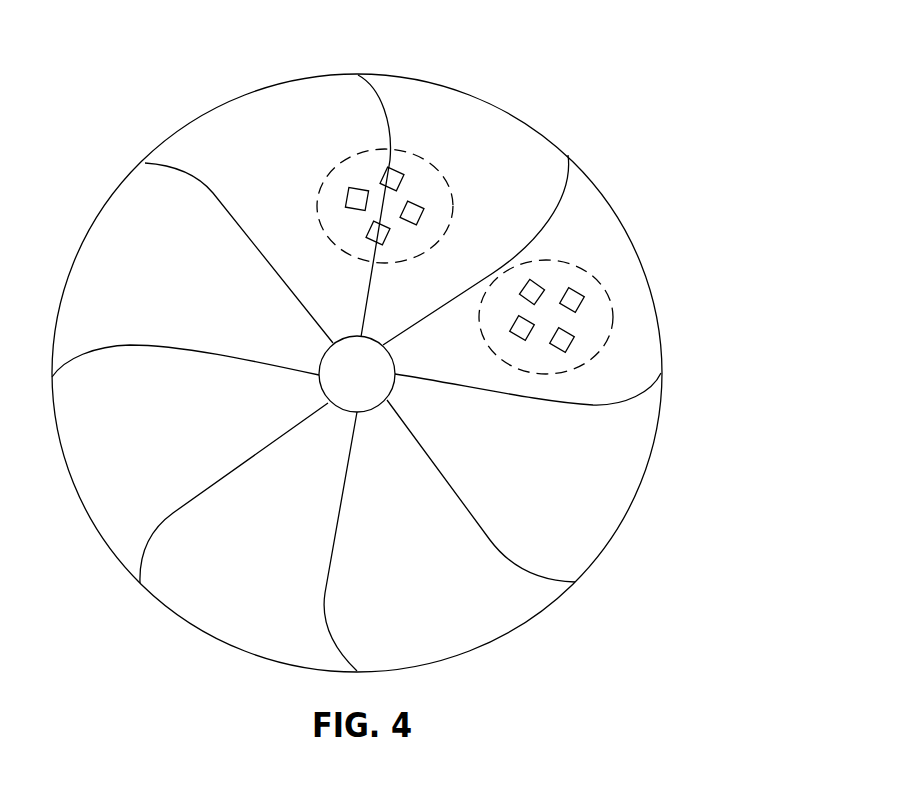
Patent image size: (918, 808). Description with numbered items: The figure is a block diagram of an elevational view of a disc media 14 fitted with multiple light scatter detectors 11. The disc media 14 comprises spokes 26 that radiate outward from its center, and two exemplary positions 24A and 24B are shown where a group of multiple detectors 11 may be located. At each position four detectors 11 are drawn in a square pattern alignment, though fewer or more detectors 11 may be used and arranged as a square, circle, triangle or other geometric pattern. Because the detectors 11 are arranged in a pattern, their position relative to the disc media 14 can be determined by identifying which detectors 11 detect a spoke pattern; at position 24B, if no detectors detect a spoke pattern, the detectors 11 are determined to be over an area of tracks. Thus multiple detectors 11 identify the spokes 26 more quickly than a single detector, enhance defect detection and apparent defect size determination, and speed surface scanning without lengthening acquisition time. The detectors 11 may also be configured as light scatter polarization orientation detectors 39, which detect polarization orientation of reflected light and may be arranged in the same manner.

The disc media 14 is at (401, 347).
The spokes 26 is at (145, 163).
The first exemplary position for multiple detectors 24A is at (464, 164).
The second exemplary position for multiple detectors 24B is at (604, 279).
The light scatter detectors 11 is at (423, 210).
The light scatter polarization orientation detectors 39 is at (583, 297).